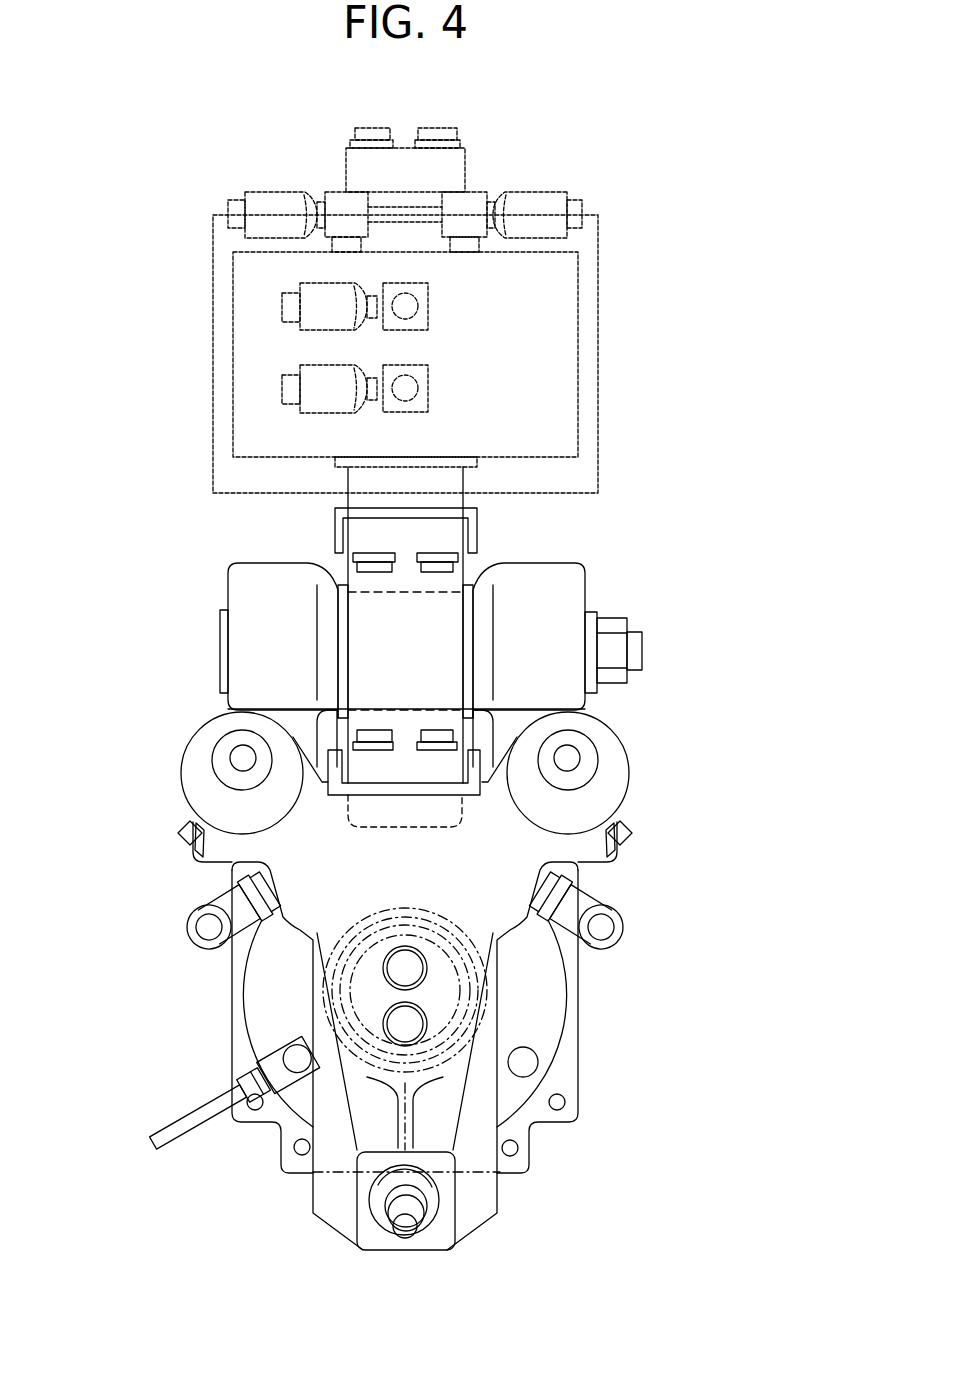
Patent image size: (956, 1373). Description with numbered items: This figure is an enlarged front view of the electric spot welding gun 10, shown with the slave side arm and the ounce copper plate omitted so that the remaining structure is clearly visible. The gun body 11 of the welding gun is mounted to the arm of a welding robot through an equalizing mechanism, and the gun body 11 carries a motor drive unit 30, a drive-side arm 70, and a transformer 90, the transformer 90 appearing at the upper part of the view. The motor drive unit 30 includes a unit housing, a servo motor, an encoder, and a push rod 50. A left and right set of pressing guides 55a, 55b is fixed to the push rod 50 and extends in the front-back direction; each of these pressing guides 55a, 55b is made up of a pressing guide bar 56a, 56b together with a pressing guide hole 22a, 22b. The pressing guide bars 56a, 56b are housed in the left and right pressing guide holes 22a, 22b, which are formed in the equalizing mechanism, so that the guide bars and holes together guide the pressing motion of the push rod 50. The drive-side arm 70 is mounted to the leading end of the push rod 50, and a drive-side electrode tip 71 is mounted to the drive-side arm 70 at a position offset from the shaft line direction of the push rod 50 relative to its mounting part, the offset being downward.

The electric spot welding gun 10 is at (404, 672).
The gun body 11 is at (584, 96).
The transformer 90 is at (597, 263).
The pressing guide 55a is at (698, 705).
The pressing guide 55b is at (112, 705).
The pressing guide bar 56a is at (592, 755).
The pressing guide bar 56b is at (218, 755).
The pressing guide hole 22a is at (604, 823).
The pressing guide hole 22b is at (206, 823).
The motor drive unit 30 is at (604, 1088).
The push rod 50 is at (437, 997).
The drive-side arm 70 is at (485, 1197).
The drive-side electrode tip 71 is at (405, 1227).